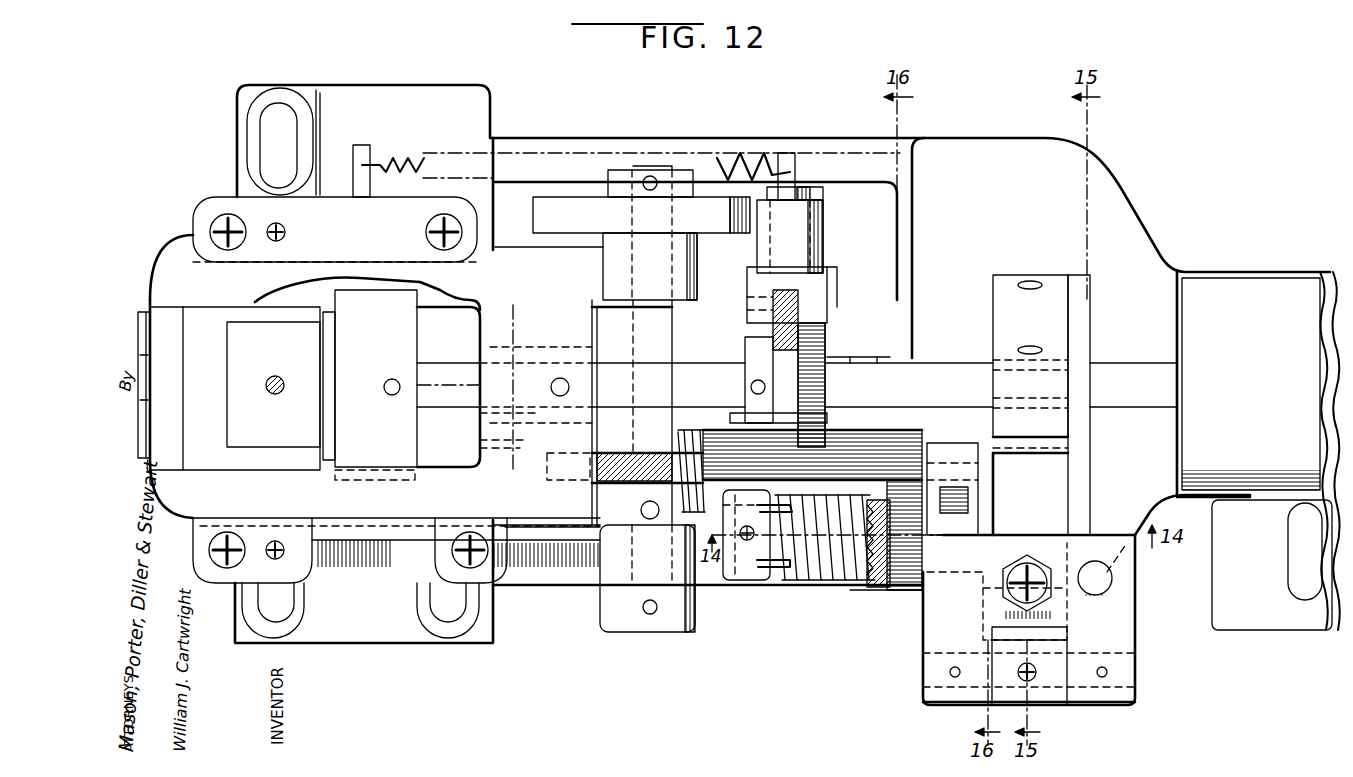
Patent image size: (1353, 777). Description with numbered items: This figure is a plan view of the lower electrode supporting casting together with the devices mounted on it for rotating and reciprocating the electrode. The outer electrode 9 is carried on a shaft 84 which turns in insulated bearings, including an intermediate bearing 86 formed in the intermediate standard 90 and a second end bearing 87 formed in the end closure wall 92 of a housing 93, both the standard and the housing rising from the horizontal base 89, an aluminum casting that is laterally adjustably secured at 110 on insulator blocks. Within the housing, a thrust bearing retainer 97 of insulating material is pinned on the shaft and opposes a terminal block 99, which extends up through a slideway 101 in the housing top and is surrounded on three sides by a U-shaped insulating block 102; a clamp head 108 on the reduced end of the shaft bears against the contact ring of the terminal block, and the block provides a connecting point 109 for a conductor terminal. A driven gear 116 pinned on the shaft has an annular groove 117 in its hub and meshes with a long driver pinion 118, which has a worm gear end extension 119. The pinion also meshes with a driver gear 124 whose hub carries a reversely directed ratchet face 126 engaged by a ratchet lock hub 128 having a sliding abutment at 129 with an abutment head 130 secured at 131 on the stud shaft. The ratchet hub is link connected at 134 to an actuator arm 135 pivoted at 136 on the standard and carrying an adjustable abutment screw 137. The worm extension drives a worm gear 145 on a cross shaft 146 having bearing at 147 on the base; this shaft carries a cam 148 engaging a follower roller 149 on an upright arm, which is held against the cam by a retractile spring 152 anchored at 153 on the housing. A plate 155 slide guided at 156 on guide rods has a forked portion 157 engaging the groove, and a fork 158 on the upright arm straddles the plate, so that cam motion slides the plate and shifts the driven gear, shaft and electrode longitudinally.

The outer electrode 9 is at (1250, 298).
The shaft 84 is at (462, 360).
The intermediate bearing 86 is at (1042, 340).
The second end bearing 87 is at (530, 418).
The horizontal base 89 is at (563, 575).
The intermediate standard 90 is at (1055, 305).
The end closure wall 92 is at (520, 446).
The housing 93 is at (400, 525).
The thrust bearing retainer 97 is at (422, 302).
The terminal block 99 is at (305, 358).
The slideway 101 is at (290, 472).
The U-shaped insulating block 102 is at (228, 300).
The clamp head 108 is at (143, 318).
The connecting point 109 is at (280, 394).
The adjustable securing means 110 is at (283, 112).
The driven gear 116 is at (828, 353).
The annular groove 117 is at (745, 358).
The long driver pinion 118 is at (880, 432).
The worm gear end extension 119 is at (700, 432).
The driver gear 124 is at (898, 600).
The reversely directed ratchet face 126 is at (880, 590).
The ratchet lock hub 128 is at (840, 580).
The sliding abutment 129 is at (792, 540).
The abutment head 130 is at (752, 582).
The securing means 131 is at (758, 530).
The link connection 134 is at (958, 472).
The actuator arm 135 is at (937, 630).
The pivot 136 is at (1000, 672).
The abutment screw 137 is at (1020, 558).
The worm gear 145 is at (600, 470).
The cross shaft 146 is at (690, 312).
The bearing 147 is at (695, 275).
The cam 148 is at (553, 208).
The follower roller 149 is at (812, 195).
The retractile spring 152 is at (745, 157).
The anchor 153 is at (372, 152).
The plate 155 is at (828, 262).
The slide guide 156 is at (860, 365).
The forked portion 157 is at (770, 340).
The fork 158 is at (828, 280).